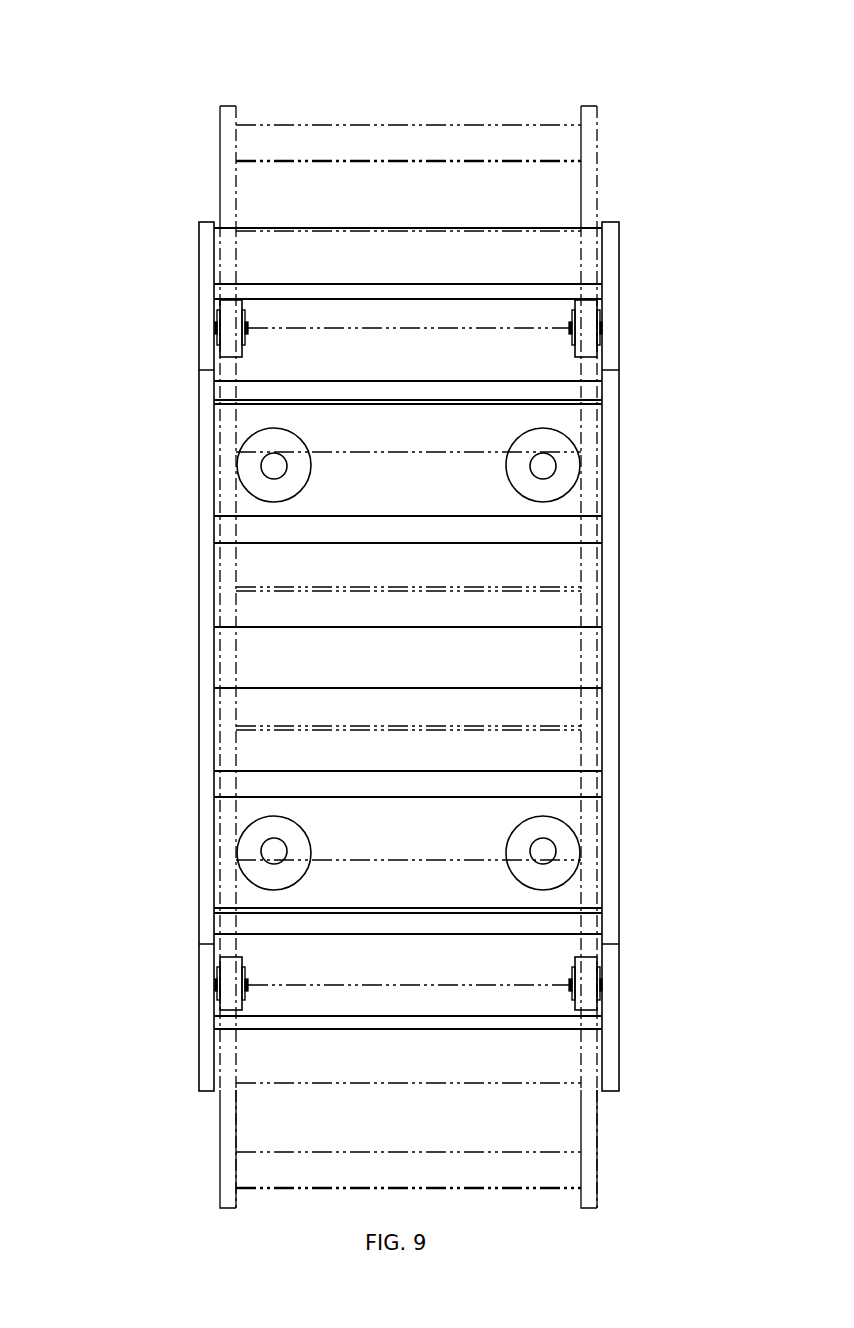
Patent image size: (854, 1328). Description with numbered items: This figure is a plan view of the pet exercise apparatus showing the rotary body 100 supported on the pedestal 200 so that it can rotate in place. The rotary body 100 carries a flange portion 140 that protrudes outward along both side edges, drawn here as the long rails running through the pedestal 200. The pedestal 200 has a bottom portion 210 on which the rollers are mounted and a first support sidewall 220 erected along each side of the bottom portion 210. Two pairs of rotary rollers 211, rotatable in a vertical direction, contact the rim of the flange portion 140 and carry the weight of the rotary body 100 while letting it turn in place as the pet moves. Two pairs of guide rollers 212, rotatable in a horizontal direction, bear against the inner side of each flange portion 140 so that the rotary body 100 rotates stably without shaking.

The rotary body 100 is at (402, 138).
The flange portion 140 is at (232, 159).
The pedestal 200 is at (184, 1030).
The bottom portion 210 is at (602, 430).
The rotary roller 211 is at (248, 842).
The guide roller 212 is at (218, 973).
The first support sidewall 220 is at (203, 653).